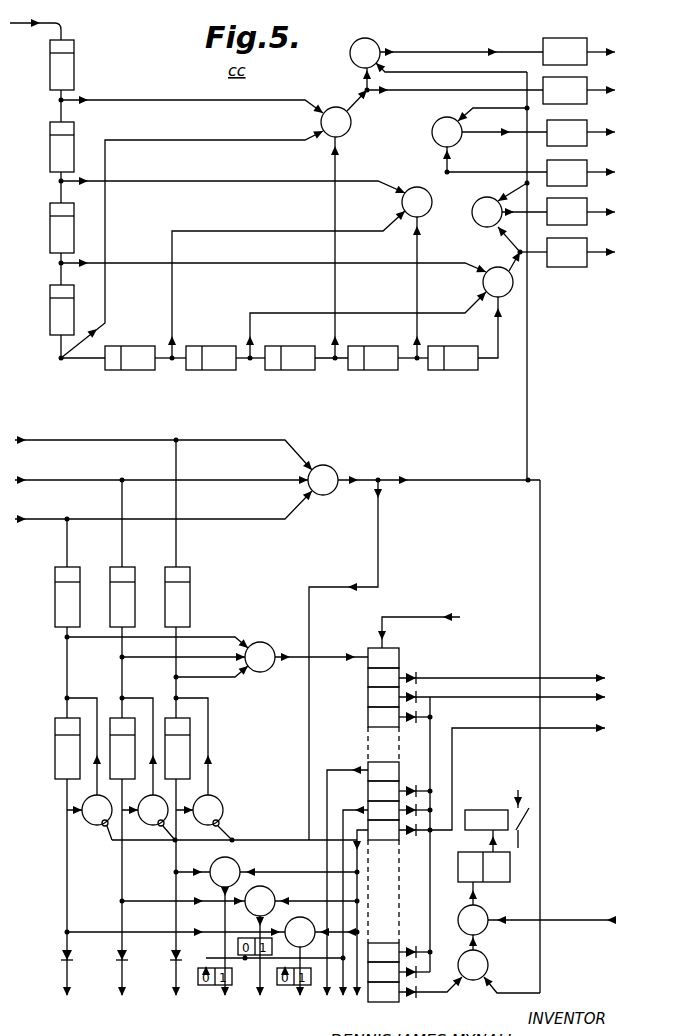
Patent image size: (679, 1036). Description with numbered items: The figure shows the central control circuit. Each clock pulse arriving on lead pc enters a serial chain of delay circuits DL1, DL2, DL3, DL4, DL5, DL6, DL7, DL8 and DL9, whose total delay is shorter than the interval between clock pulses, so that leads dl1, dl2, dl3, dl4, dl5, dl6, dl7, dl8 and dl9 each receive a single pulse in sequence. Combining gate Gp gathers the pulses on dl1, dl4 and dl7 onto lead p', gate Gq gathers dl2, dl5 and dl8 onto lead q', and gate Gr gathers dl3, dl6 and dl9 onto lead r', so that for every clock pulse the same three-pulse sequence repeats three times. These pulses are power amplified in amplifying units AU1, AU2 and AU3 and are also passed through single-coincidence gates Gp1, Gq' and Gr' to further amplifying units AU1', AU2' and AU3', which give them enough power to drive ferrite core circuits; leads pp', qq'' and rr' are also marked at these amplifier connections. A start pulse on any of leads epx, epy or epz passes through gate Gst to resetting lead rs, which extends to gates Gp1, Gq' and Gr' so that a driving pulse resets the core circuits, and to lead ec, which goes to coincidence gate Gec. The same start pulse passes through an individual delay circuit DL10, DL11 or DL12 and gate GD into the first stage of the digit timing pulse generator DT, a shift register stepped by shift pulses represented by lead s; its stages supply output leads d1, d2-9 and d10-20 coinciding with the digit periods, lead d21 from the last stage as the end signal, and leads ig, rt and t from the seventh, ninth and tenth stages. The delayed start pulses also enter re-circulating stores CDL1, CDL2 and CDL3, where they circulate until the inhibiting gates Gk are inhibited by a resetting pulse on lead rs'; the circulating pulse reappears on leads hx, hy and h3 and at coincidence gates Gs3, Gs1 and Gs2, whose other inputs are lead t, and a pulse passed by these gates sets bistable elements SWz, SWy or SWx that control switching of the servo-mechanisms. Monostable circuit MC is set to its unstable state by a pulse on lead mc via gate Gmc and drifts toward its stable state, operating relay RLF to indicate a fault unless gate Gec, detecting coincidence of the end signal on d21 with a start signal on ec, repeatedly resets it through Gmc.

The delay circuit DL1 is at (44, 65).
The delay circuit DL2 is at (44, 147).
The delay circuit DL3 is at (44, 228).
The delay circuit DL4 is at (44, 310).
The delay circuit DL5 is at (130, 371).
The delay circuit DL6 is at (211, 371).
The delay circuit DL7 is at (290, 371).
The delay circuit DL8 is at (373, 371).
The delay circuit DL9 is at (453, 371).
The delay circuit DL10 is at (50, 597).
The delay circuit DL11 is at (110, 578).
The delay circuit DL12 is at (190, 582).
The re-circulating store CDL1 is at (55, 758).
The re-circulating store CDL2 is at (106, 710).
The re-circulating store CDL3 is at (190, 744).
The combining gate Gp is at (342, 108).
The single-coincidence or gate Gp1 is at (365, 45).
The combining gate Gq is at (415, 194).
The single-coincidence or gate Gq' is at (472, 140).
The single-coincidence or gate Gr' is at (493, 214).
The combining gate Gr is at (499, 260).
The or gate Gst is at (424, 471).
The or gate GD is at (217, 666).
The inhibiting gate Gk is at (212, 817).
The coincidence-of-two gate Gs1 is at (310, 908).
The coincidence-of-two gate Gs2 is at (271, 889).
The coincidence-of-two gate Gs3 is at (236, 860).
The bistable element SWx is at (276, 990).
The bistable element SWy is at (240, 936).
The bistable element SWz is at (195, 970).
The digit timing pulse generator DT is at (363, 825).
The relay RLF is at (484, 810).
The monostable circuit MC is at (500, 882).
The or gate Gmc is at (462, 910).
The coincidence gate Gec is at (499, 964).
The power amplifying unit AU1 is at (579, 95).
The power amplifying unit AU1' is at (579, 56).
The power amplifying unit AU2 is at (531, 177).
The power amplifying unit AU2' is at (581, 137).
The power amplifying unit AU3 is at (567, 257).
The power amplifying unit AU3' is at (581, 216).
The clock pulse lead pc is at (79, 29).
The delay output lead dl1 is at (193, 98).
The delay output lead dl2 is at (234, 178).
The delay output lead dl3 is at (274, 259).
The delay output lead dl4 is at (193, 238).
The delay output lead dl5 is at (288, 283).
The delay output lead dl6 is at (308, 312).
The delay output lead dl7 is at (335, 290).
The delay output lead dl8 is at (417, 282).
The delay output lead dl9 is at (502, 336).
The lead p' is at (343, 66).
The signal pp' is at (450, 265).
The lead q' is at (427, 152).
The signal qq'' is at (492, 191).
The lead r' is at (476, 238).
The signal rr' is at (545, 278).
The start pulse lead epx is at (165, 444).
The start pulse lead epy is at (161, 470).
The start pulse lead epz is at (165, 505).
The resetting lead rs is at (512, 427).
The resetting pulse lead rs' is at (331, 660).
The lead ec is at (540, 538).
The shift pulse lead s is at (420, 623).
The output lead t is at (355, 864).
The output lead rt is at (345, 800).
The output lead ig is at (342, 768).
The output lead d1 is at (502, 669).
The output lead d2-9 is at (502, 827).
The output lead d10-20 is at (506, 771).
The output lead d21 is at (425, 998).
The lead h3 is at (67, 986).
The lead hy is at (122, 986).
The lead hx is at (179, 986).
The lead mc is at (570, 920).